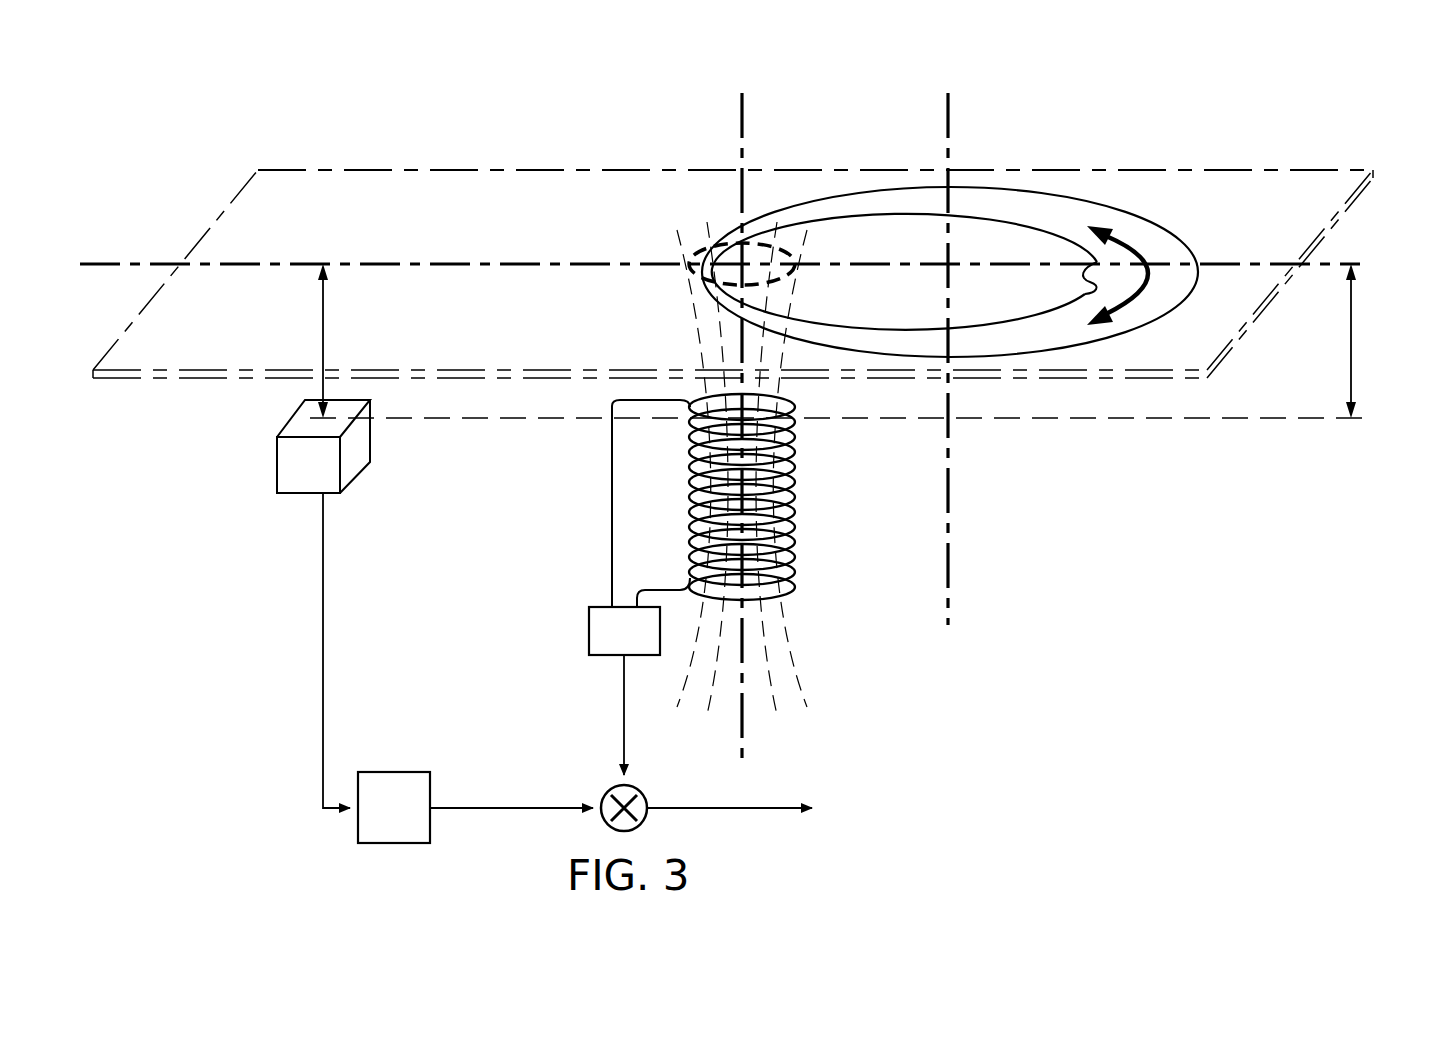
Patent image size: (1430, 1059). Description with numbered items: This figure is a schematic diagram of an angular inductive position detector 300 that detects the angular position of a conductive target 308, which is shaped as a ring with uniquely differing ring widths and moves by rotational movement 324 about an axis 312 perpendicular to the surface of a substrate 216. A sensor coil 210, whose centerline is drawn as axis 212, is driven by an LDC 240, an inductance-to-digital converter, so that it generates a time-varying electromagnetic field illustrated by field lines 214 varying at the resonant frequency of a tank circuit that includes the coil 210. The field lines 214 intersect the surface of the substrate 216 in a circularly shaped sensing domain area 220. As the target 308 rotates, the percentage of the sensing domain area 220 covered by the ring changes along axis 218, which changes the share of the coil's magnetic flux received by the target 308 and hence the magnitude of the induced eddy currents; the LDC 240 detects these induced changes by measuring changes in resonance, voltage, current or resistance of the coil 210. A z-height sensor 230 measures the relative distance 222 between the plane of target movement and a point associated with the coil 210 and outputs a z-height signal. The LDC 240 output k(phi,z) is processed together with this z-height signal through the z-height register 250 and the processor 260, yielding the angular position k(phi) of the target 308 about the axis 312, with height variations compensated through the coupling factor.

The inductive position detector 300 is at (597, 84).
The substrate 216 is at (489, 169).
The axis 218 is at (96, 262).
The coil axis 212 is at (744, 108).
The axis of rotation 312 is at (950, 108).
The target 308 is at (1130, 241).
The rotational movement 324 is at (1148, 262).
The sensing domain area 220 is at (777, 281).
The field lines 214 is at (697, 318).
The coil 210 is at (789, 590).
The relative distance 222 is at (1352, 345).
The z-height sensor 230 is at (275, 466).
The LDC 240 is at (588, 628).
The z-height register 250 is at (395, 845).
The processor 260 is at (604, 792).